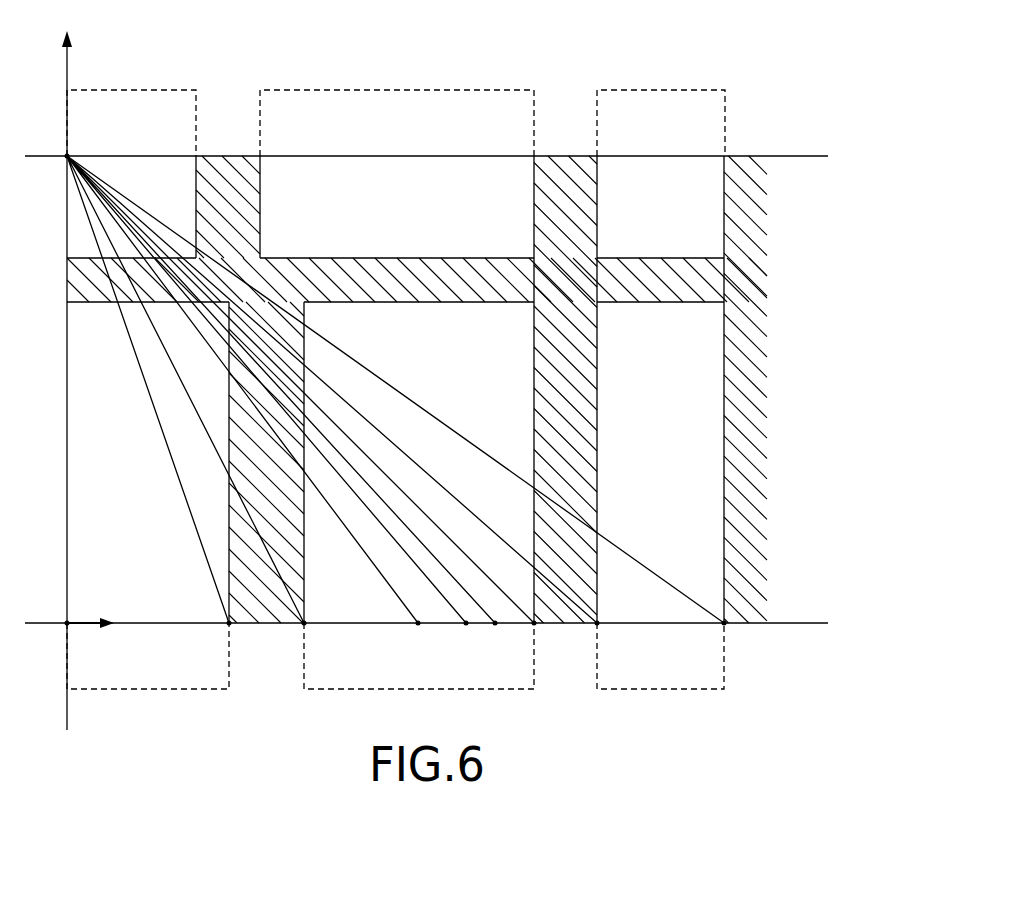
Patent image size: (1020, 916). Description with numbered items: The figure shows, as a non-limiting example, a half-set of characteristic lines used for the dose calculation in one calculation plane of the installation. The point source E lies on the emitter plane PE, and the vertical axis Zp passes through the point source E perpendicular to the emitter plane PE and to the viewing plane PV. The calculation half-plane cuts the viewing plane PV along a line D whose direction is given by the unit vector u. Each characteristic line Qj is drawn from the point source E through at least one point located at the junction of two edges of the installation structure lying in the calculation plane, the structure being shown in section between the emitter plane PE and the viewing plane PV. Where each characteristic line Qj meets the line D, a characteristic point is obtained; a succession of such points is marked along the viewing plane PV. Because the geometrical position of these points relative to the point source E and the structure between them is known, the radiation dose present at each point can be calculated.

The vertical axis Zp is at (68, 365).
The viewing plane PV is at (793, 615).
The emitter plane PE is at (793, 149).
The unit vector u is at (112, 578).
The characteristic line Qj is at (386, 383).
The point source E is at (57, 144).